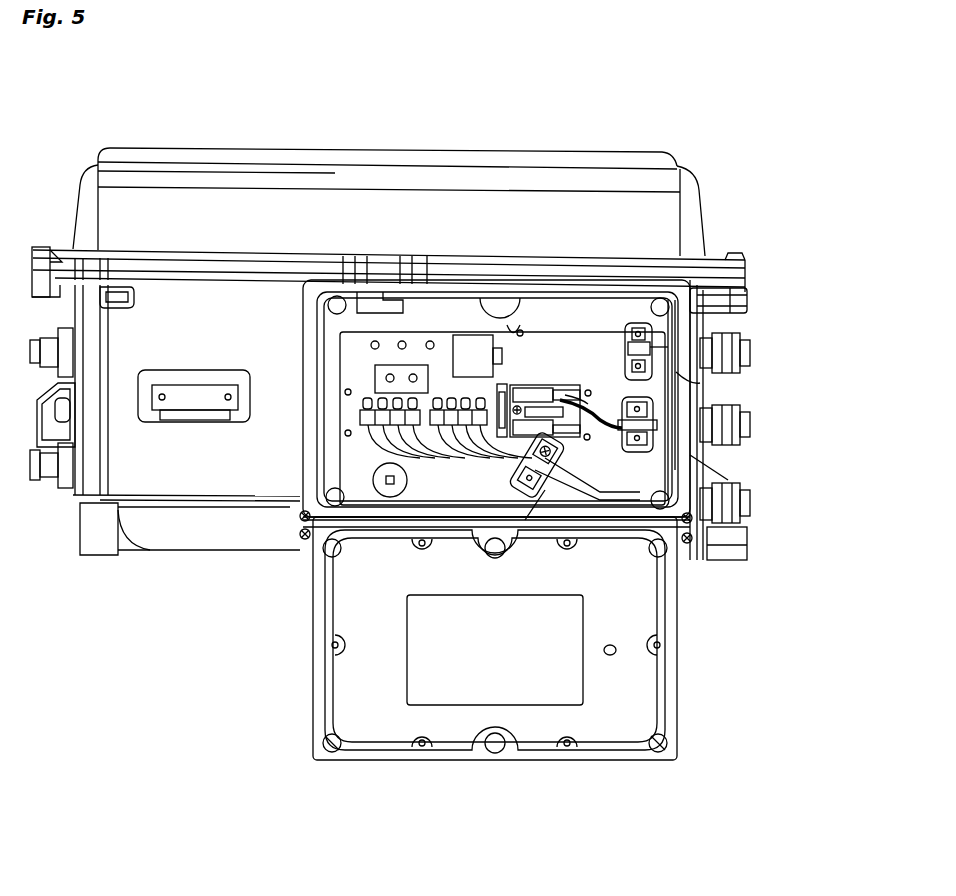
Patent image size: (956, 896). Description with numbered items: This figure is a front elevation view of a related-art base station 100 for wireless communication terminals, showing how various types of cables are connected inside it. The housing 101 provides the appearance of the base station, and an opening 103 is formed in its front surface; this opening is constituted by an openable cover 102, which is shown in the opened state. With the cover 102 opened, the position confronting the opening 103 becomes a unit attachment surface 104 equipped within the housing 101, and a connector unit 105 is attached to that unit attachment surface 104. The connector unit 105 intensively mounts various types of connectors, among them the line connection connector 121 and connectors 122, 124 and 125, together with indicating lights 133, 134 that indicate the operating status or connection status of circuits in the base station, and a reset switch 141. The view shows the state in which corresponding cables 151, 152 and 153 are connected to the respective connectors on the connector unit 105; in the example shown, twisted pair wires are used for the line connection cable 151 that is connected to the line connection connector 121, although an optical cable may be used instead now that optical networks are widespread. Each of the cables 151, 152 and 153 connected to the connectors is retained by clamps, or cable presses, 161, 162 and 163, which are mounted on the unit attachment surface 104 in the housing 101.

The base station 100 is at (712, 197).
The housing 101 is at (716, 240).
The cover 102 is at (685, 690).
The opening 103 is at (573, 320).
The unit attachment surface 104 is at (700, 462).
The connector unit 105 is at (438, 332).
The line connection connector 121 is at (362, 430).
The connector 122 is at (512, 387).
The connector 124 is at (628, 345).
The connector 125 is at (514, 322).
The indicating light 133 is at (376, 337).
The indicating light 134 is at (362, 406).
The reset switch 141 is at (376, 378).
The line connection cable 151 is at (680, 605).
The cable 152 is at (705, 396).
The cable 153 is at (705, 383).
The clamp 161 is at (557, 500).
The clamp 162 is at (700, 452).
The clamp 163 is at (720, 352).